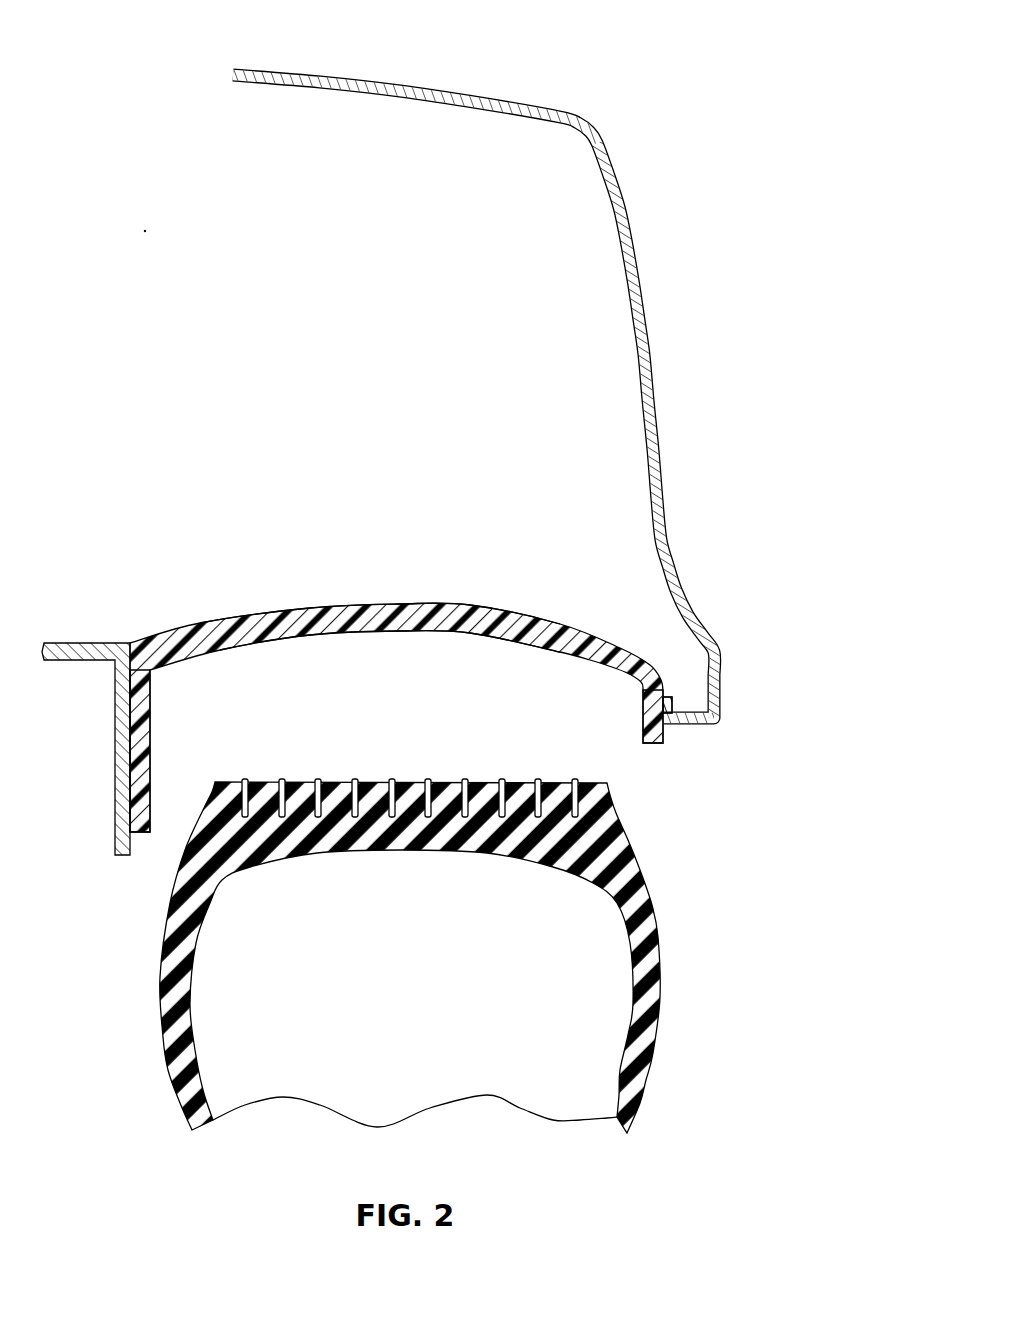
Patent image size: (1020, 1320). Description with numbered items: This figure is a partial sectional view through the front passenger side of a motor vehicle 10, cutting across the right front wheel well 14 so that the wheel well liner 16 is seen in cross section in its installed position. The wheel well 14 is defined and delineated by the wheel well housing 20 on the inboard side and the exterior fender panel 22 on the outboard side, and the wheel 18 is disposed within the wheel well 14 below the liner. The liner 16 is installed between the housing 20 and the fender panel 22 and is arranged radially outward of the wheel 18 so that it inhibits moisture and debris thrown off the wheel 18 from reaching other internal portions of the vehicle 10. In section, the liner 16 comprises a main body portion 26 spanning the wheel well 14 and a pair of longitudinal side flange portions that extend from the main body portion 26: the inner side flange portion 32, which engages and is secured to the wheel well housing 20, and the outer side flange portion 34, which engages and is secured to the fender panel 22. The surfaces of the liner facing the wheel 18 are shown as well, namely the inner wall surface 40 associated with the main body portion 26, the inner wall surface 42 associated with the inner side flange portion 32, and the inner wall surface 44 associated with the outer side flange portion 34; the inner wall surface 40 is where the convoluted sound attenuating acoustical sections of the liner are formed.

The motor vehicle 10 is at (688, 132).
The wheel well 14 is at (417, 694).
The wheel well liner 16 is at (309, 606).
The wheel 18 is at (660, 997).
The wheel well housing 20 is at (115, 843).
The exterior fender panel 22 is at (656, 370).
The main body portion 26 is at (350, 607).
The inner side flange portion 32 is at (140, 702).
The outer side flange portion 34 is at (653, 745).
The inner wall surface 40 is at (320, 635).
The inner wall surface 42 is at (152, 723).
The inner wall surface 44 is at (643, 705).